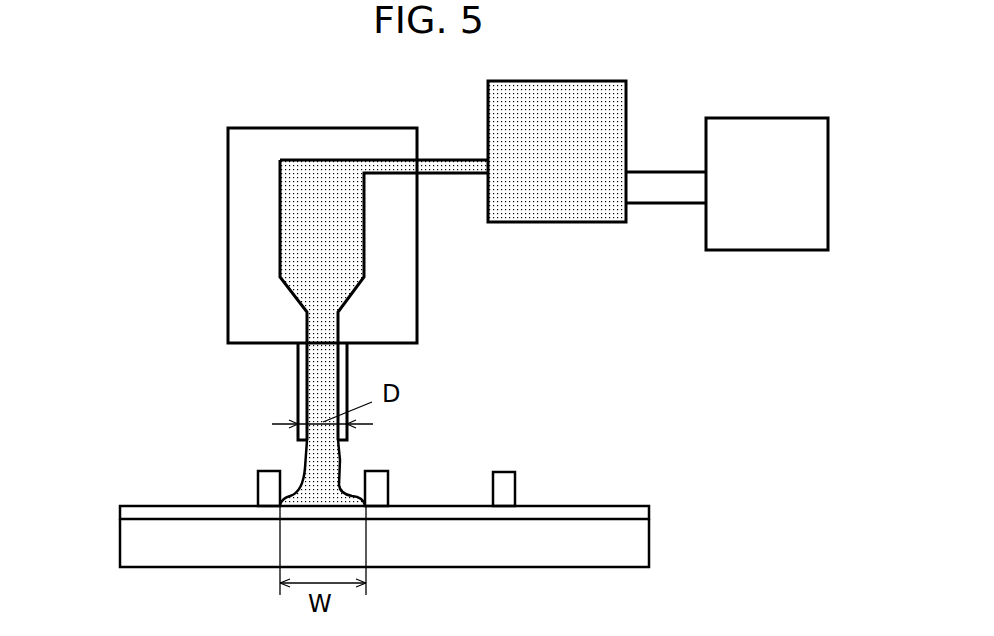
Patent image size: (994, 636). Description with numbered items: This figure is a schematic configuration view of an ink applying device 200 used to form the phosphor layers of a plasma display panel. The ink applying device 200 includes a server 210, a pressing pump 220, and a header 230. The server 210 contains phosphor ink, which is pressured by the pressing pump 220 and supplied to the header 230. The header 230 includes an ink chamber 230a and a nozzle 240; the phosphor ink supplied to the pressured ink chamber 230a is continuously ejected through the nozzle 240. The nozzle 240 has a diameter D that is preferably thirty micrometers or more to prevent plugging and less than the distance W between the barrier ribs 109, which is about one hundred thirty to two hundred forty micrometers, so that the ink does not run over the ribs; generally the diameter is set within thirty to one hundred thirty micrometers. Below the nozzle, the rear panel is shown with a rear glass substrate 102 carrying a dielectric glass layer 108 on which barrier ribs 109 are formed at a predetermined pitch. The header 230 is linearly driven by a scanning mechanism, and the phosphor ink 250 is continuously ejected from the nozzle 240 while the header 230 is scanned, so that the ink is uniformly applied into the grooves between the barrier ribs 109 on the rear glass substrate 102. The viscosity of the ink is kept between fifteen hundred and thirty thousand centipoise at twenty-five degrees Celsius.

The ink applying device 200 is at (430, 122).
The header 230 is at (227, 277).
The ink chamber 230a is at (300, 223).
The nozzle 240 is at (300, 400).
The pressing pump 220 is at (573, 223).
The server 210 is at (778, 252).
The phosphor ink 250 is at (320, 487).
The barrier ribs 109 is at (267, 485).
The dielectric glass layer 108 is at (643, 515).
The rear glass substrate 102 is at (637, 538).